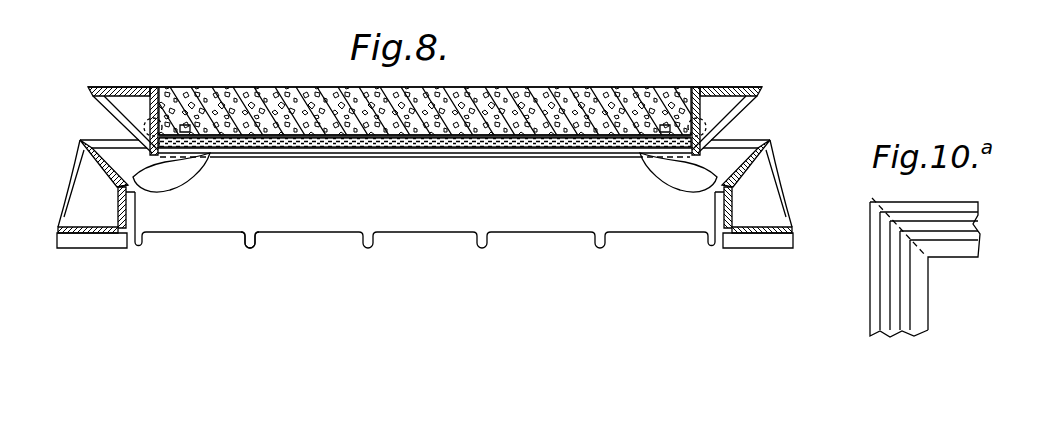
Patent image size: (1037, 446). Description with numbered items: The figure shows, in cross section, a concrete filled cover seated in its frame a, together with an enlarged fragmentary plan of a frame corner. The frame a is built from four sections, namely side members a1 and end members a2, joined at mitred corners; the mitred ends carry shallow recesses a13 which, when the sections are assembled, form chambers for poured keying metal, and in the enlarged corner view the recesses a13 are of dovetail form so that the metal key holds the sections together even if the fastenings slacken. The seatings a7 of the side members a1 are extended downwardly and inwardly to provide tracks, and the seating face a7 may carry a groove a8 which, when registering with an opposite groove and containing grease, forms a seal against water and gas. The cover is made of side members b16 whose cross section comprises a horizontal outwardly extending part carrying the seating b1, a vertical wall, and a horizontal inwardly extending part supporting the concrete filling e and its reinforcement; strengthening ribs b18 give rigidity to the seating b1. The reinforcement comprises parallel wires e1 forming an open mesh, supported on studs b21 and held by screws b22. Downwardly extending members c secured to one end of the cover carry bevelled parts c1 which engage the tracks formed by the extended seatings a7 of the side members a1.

In FIG. 8, the frame a is at (425, 213).
In FIG. 10a, the frame a is at (963, 206).
In FIG. 8, the side member of frame a1 is at (120, 203).
In FIG. 8, the end member of frame a2 is at (312, 218).
In FIG. 8, the seating face of frame a7 is at (117, 180).
In FIG. 10a, the seating face of frame a7 is at (898, 313).
In FIG. 10a, the groove or recess in seating a8 is at (947, 242).
In FIG. 10a, the shallow recess in mitred end a13 is at (904, 252).
In FIG. 8, the seating of cover b1 is at (88, 95).
In FIG. 8, the side member of cover b16 is at (152, 100).
In FIG. 8, the strengthening rib b18 is at (128, 108).
In FIG. 8, the stud b21 is at (200, 146).
In FIG. 8, the screw b22 is at (187, 128).
In FIG. 8, the downwardly extending member c is at (173, 175).
In FIG. 8, the bevelled part c1 is at (131, 178).
In FIG. 8, the concrete filling e is at (513, 92).
In FIG. 8, the reinforcing wire e1 is at (572, 140).